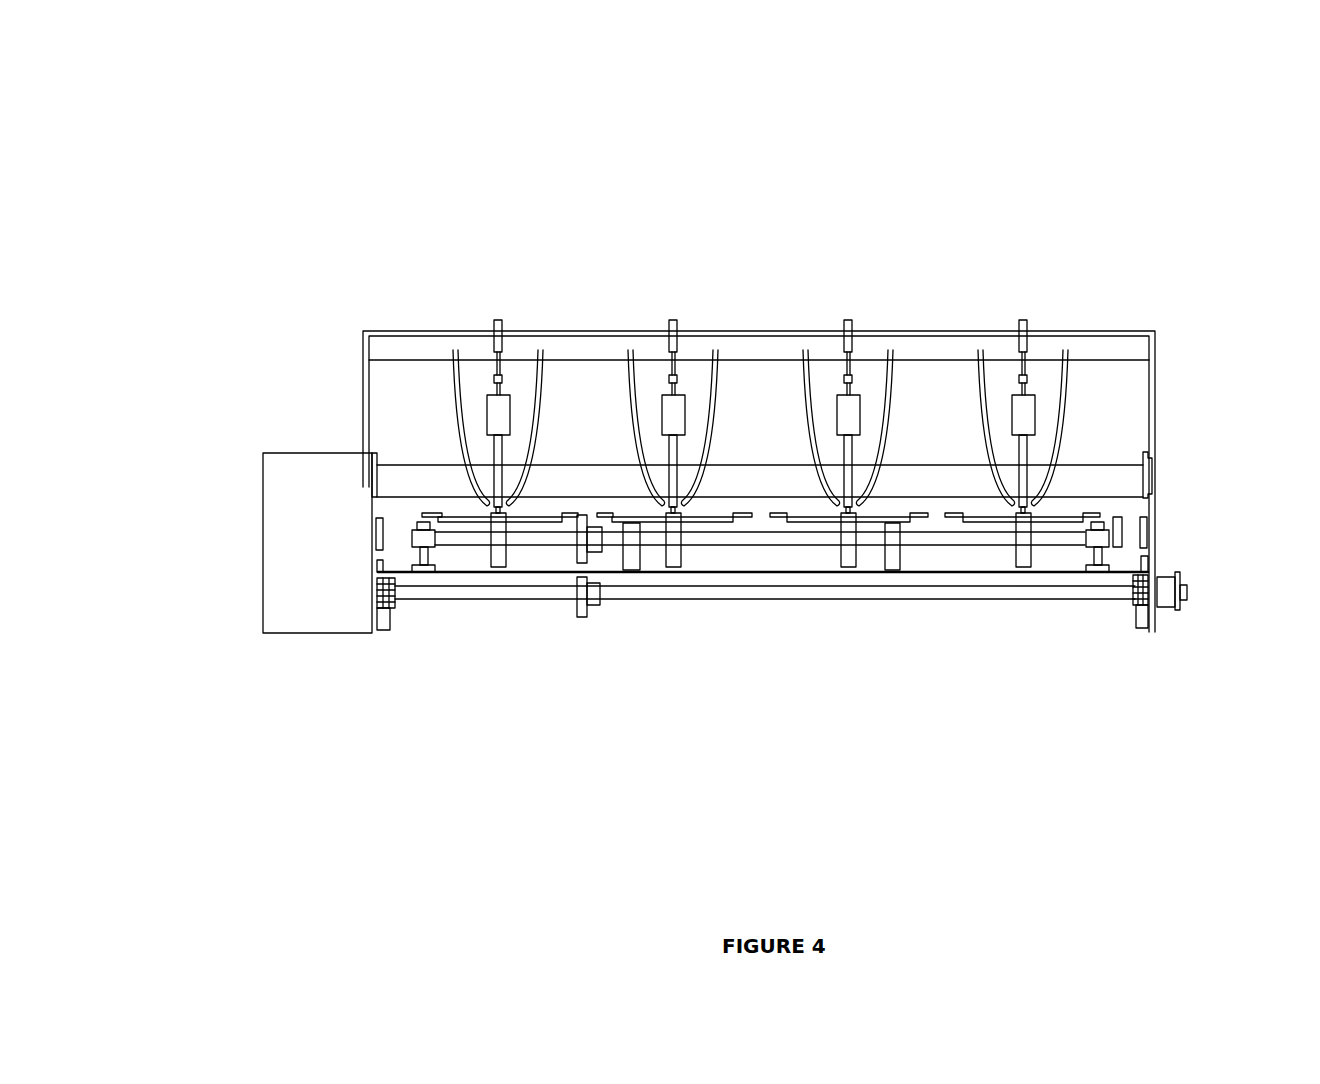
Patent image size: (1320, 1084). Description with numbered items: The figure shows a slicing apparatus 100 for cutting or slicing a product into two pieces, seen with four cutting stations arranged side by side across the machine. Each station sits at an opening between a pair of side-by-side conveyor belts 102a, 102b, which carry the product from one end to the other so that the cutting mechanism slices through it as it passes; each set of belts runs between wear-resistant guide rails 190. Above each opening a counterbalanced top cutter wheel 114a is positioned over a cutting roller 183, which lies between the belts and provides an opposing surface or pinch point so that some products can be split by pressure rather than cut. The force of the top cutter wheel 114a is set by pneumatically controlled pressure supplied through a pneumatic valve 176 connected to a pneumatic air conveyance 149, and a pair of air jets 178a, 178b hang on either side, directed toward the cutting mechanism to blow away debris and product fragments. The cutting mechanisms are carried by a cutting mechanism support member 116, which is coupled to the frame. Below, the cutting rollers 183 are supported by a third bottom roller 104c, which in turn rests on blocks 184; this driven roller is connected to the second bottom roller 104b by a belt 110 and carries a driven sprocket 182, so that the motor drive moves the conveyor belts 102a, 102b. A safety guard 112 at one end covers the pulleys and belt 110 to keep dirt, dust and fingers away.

The slicing apparatus 100 is at (196, 74).
The safety guard 112 is at (317, 508).
The pneumatic air conveyance 149 is at (463, 292).
The pneumatic valve 176 is at (549, 325).
The air jet 178a is at (430, 388).
The air jet 178b is at (576, 394).
The cutting mechanism support member 116 is at (816, 439).
The conveyor belt 102b is at (1103, 471).
The guide rail 190 is at (836, 582).
The conveyor belt 102a is at (757, 593).
The second bottom roller 104b is at (765, 627).
The third bottom roller 104c is at (760, 600).
The block 184 is at (667, 609).
The belt 110 is at (537, 604).
The top cutter wheel 114a is at (432, 564).
The cutting roller 183 is at (445, 630).
The driven sprocket 182 is at (331, 659).